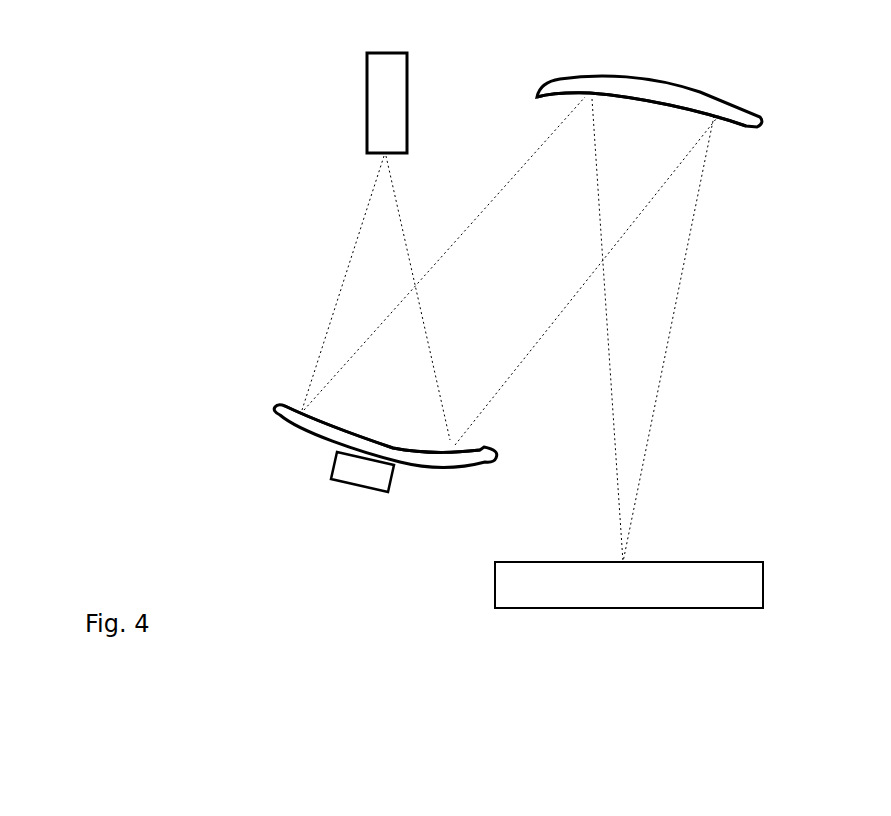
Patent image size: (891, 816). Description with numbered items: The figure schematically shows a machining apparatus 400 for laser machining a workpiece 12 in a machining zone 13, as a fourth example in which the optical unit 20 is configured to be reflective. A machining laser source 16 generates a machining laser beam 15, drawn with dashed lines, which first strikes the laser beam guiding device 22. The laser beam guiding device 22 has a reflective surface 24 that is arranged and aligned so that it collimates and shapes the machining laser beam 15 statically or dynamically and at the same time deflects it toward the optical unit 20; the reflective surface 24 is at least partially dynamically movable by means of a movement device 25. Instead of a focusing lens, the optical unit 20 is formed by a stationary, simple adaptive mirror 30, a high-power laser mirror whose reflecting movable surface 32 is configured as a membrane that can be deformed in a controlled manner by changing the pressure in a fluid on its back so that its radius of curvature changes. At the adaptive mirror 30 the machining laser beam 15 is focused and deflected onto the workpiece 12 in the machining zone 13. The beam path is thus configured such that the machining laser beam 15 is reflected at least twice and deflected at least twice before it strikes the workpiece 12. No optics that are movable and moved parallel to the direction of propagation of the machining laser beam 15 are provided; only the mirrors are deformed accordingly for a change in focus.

The machining apparatus 400 is at (158, 80).
The machining laser source 16 is at (367, 77).
The reflective surface 24 is at (371, 440).
The adaptive mirror 30 is at (659, 150).
The optical unit 20 is at (702, 150).
The reflecting movable surface 32 is at (658, 102).
The machining laser beam 15 is at (357, 284).
The movement device 25 is at (337, 478).
The laser beam guiding device 22 is at (386, 328).
The machining zone 13 is at (640, 552).
The workpiece 12 is at (648, 597).